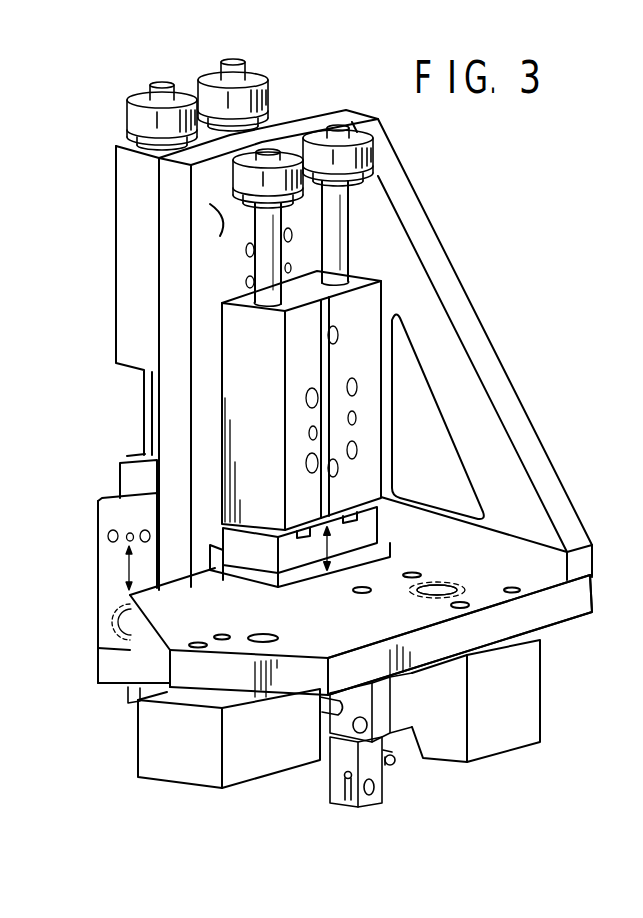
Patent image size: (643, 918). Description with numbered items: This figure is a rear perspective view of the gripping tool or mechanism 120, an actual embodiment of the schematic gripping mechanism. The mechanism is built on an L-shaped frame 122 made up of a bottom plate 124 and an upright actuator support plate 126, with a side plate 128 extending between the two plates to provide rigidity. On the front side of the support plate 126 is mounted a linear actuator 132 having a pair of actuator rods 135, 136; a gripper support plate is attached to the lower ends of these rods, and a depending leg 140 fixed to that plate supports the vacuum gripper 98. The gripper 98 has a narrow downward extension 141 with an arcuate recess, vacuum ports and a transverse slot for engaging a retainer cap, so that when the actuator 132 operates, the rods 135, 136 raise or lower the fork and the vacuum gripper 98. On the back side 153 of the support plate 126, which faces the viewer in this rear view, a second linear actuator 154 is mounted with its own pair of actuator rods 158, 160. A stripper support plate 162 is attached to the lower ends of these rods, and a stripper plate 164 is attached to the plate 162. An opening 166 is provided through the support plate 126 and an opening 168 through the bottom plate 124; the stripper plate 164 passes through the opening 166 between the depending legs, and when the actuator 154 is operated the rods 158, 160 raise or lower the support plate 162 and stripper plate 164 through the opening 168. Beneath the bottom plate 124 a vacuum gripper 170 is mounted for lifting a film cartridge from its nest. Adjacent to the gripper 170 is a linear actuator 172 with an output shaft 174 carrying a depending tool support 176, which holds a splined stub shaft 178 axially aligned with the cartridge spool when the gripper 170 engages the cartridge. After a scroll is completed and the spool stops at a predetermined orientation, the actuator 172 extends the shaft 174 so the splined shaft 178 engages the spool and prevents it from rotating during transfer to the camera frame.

The vacuum gripper 98 is at (108, 664).
The gripping tool or mechanism 120 is at (537, 201).
The L-shaped frame 122 is at (598, 548).
The bottom plate 124 is at (558, 607).
The actuator support plate 126 is at (310, 110).
The side plate 128 is at (472, 340).
The linear actuator 132 is at (116, 240).
The actuator rod 135 is at (233, 80).
The actuator rod 136 is at (158, 97).
The depending leg 140 is at (108, 548).
The downward extension 141 is at (125, 702).
The back side 153 is at (244, 246).
The linear actuator 154 is at (237, 382).
The actuator rod 158 is at (257, 272).
The actuator rod 160 is at (337, 217).
The stripper support plate 162 is at (350, 540).
The stripper plate 164 is at (287, 580).
The opening 166 is at (220, 578).
The opening 168 is at (338, 580).
The vacuum gripper 170 is at (507, 717).
The linear actuator 172 is at (148, 747).
The output shaft 174 is at (322, 700).
The tool support 176 is at (318, 832).
The splined stub shaft 178 is at (395, 765).